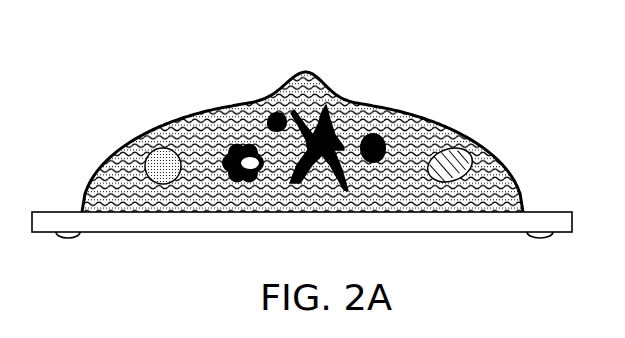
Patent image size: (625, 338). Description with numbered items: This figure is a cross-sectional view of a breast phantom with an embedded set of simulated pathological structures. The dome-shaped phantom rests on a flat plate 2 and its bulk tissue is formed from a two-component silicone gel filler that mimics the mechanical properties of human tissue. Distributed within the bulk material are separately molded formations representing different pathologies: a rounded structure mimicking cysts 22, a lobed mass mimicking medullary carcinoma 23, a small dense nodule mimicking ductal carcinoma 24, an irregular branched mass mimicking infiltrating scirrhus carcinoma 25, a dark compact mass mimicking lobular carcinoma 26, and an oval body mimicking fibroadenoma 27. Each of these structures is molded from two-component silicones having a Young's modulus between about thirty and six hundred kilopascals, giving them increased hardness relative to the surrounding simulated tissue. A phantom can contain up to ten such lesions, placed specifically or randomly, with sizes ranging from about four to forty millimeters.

The flat plate 2 is at (53, 212).
The cysts 22 is at (162, 160).
The medullary carcinoma 23 is at (232, 147).
The ductal carcinoma 24 is at (276, 112).
The infiltrating scirrhus carcinoma 25 is at (315, 128).
The lobular carcinoma 26 is at (383, 133).
The fibroadenoma 27 is at (452, 158).